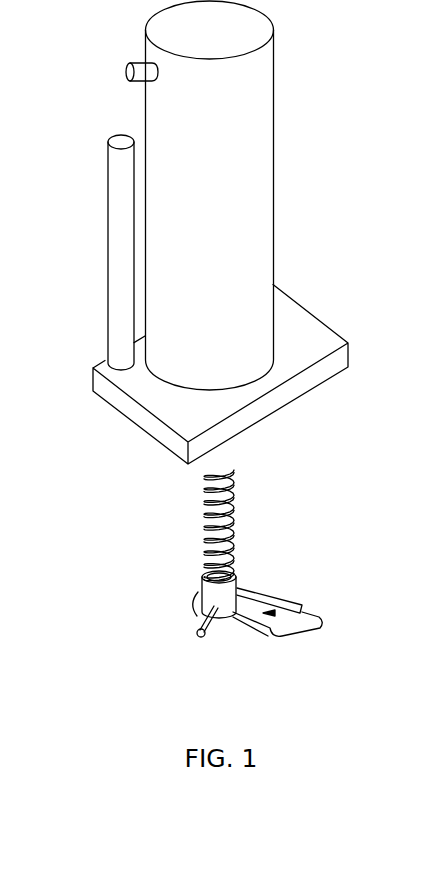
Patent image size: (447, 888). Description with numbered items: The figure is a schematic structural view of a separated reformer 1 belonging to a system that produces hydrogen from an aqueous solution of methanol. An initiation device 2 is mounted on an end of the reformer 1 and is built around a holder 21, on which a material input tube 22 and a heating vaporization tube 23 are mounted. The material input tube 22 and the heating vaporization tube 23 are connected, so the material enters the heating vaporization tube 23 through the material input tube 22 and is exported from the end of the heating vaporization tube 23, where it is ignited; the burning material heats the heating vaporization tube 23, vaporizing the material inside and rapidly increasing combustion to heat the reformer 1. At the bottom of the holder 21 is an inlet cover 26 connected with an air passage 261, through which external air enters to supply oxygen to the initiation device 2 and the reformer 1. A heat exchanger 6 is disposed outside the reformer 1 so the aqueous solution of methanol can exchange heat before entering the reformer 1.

The reformer 1 is at (274, 162).
The heat exchanger 6 is at (113, 200).
The initiation device 2 is at (250, 591).
The heating vaporization tube 23 is at (232, 498).
The holder 21 is at (193, 595).
The material input tube 22 is at (198, 633).
The inlet cover 26 is at (301, 650).
The air passage 261 is at (275, 613).